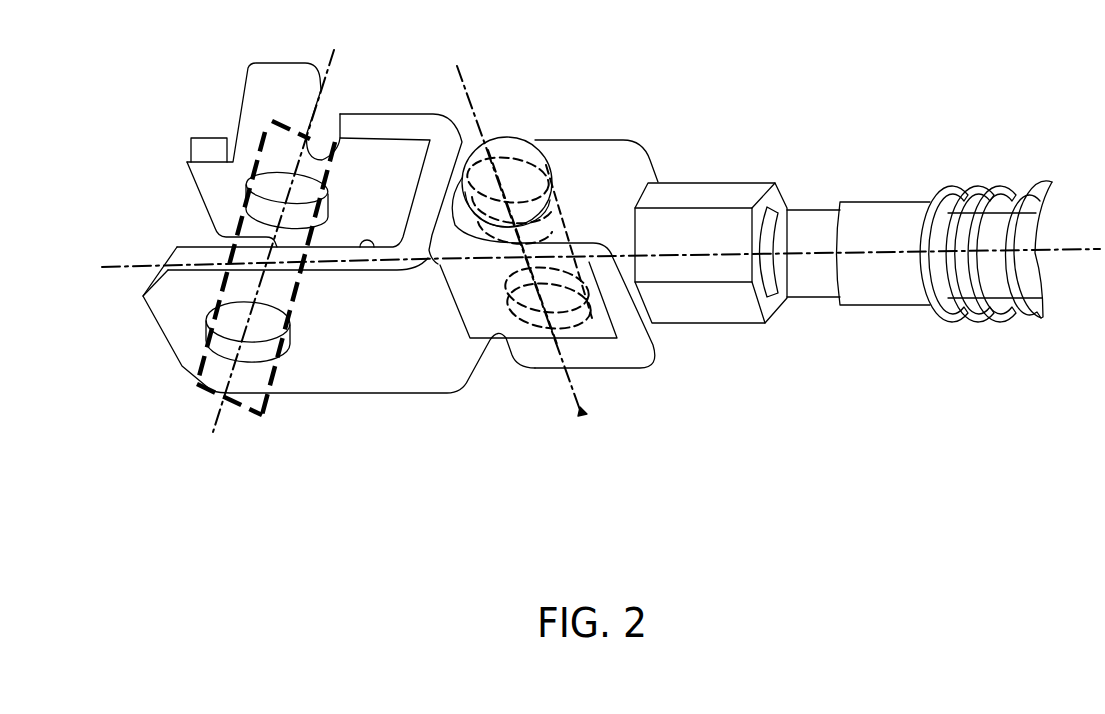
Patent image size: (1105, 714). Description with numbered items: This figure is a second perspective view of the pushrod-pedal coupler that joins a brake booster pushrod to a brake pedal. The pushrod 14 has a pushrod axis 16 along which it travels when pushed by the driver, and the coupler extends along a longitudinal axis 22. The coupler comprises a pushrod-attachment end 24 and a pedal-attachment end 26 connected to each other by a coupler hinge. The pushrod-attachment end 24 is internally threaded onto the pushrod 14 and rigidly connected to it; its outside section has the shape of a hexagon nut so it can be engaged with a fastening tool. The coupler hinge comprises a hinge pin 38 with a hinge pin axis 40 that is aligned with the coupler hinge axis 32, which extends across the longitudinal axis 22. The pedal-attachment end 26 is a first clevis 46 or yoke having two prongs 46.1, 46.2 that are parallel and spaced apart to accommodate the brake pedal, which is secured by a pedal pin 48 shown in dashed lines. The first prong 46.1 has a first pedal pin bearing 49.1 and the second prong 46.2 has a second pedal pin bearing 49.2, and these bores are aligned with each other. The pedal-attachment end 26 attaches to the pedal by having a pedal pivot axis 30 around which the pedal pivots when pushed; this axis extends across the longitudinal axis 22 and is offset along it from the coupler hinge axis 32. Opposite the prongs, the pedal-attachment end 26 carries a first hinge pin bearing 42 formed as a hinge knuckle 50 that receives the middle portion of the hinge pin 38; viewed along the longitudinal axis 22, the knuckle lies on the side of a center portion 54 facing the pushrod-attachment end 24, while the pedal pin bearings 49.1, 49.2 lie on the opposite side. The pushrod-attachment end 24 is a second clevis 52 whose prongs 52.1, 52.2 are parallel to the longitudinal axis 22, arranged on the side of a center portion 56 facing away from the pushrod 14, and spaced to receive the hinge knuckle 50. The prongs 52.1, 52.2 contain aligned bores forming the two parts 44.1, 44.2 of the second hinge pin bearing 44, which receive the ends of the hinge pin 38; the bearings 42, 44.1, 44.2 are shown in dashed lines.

The pushrod 14 is at (883, 210).
The pushrod axis 16 is at (880, 255).
The longitudinal axis 22 is at (968, 266).
The pushrod-attachment end 24 is at (559, 253).
The pedal-attachment end 26 is at (375, 112).
The pedal pivot axis 30 is at (218, 430).
The coupler hinge axis 32 is at (584, 410).
The hinge pin 38 is at (552, 162).
The hinge pin axis 40 is at (616, 442).
The first hinge pin bearing 42 is at (498, 273).
The second hinge pin bearing 44 is at (585, 260).
The hinge pin bearing part 44.1 is at (510, 157).
The hinge pin bearing part 44.2 is at (582, 313).
The first clevis 46 is at (321, 225).
The first prong 46.1 is at (188, 162).
The second prong 46.2 is at (149, 307).
The pedal pin 48 is at (207, 392).
The first pedal pin bearing 49.1 is at (257, 137).
The second pedal pin bearing 49.2 is at (212, 343).
The hinge knuckle 50 is at (497, 335).
The second clevis 52 is at (613, 260).
The first prong 52.1 is at (578, 142).
The second prong 52.2 is at (540, 360).
The center portion 54 is at (417, 237).
The center portion 56 is at (630, 308).